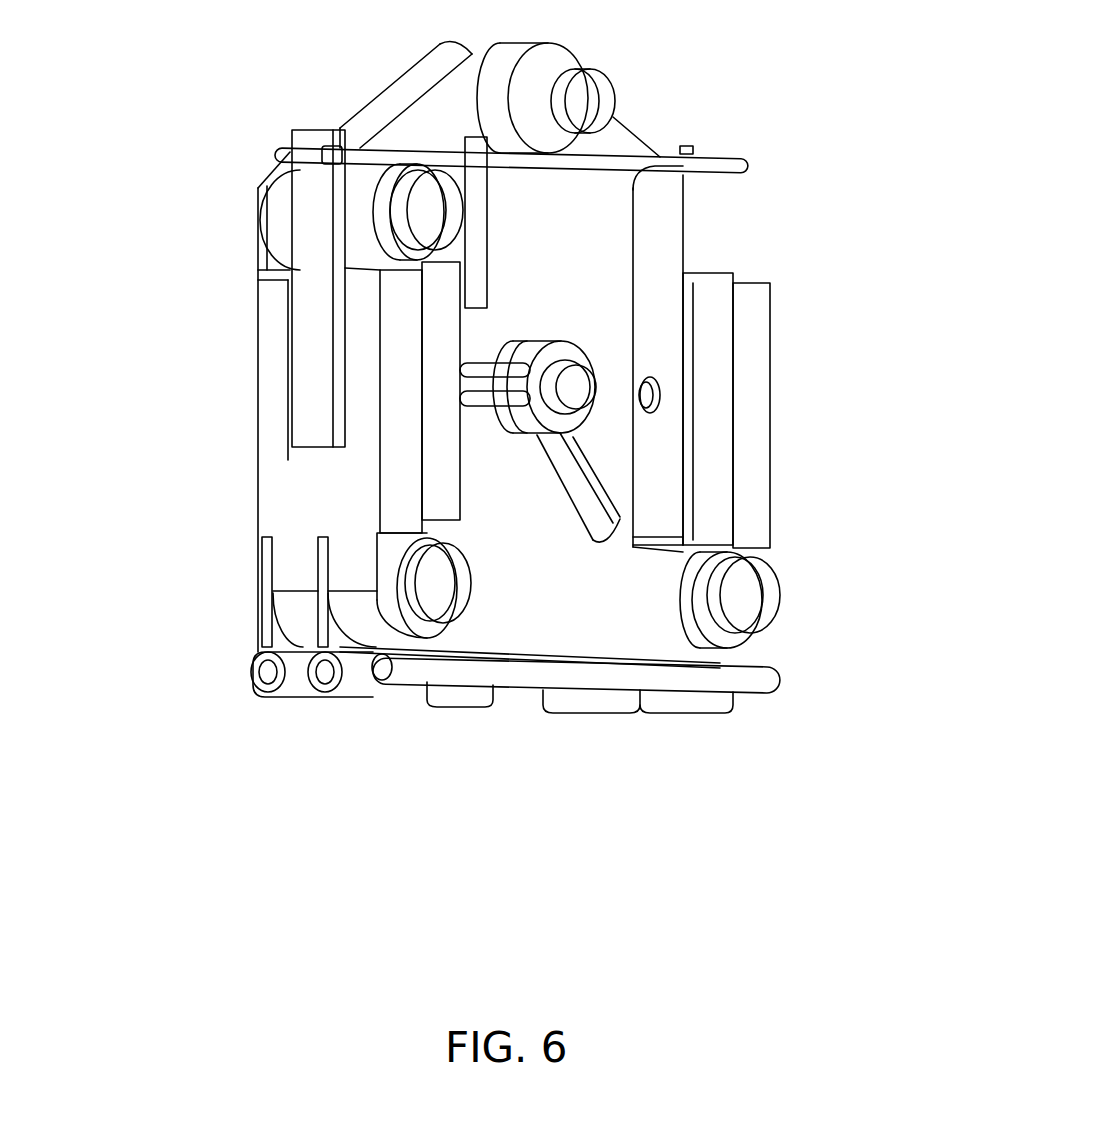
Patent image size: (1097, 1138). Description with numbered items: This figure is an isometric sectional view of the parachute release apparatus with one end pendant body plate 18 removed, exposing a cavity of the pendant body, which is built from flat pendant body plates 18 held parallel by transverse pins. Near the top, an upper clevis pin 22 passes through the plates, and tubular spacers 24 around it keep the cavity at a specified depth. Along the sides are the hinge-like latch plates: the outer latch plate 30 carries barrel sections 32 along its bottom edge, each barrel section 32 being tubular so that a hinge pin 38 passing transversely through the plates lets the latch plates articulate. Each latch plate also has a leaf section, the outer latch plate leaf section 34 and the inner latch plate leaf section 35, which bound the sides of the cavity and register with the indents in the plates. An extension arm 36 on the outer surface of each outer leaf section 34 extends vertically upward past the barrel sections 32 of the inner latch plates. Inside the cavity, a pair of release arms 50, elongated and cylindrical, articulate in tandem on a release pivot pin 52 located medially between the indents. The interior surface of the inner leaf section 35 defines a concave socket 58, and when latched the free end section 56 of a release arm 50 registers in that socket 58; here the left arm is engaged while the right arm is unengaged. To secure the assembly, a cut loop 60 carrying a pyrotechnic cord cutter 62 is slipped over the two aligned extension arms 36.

The pendant body plate 18 is at (550, 627).
The upper clevis pin 22 is at (600, 93).
The tubular spacer 24 is at (517, 70).
The outer latch plate 30 is at (285, 511).
The barrel section 32 is at (708, 180).
The outer latch plate leaf section 34 is at (330, 466).
The inner latch plate leaf section 35 is at (660, 350).
The extension arm 36 is at (310, 307).
The hinge pin 38 is at (445, 593).
The release arm 50 is at (487, 382).
The release pivot pin 52 is at (578, 392).
The free end section 56 is at (617, 540).
The socket 58 is at (650, 393).
The cut loop 60 is at (663, 157).
The pyrotechnic cord cutter 62 is at (478, 213).